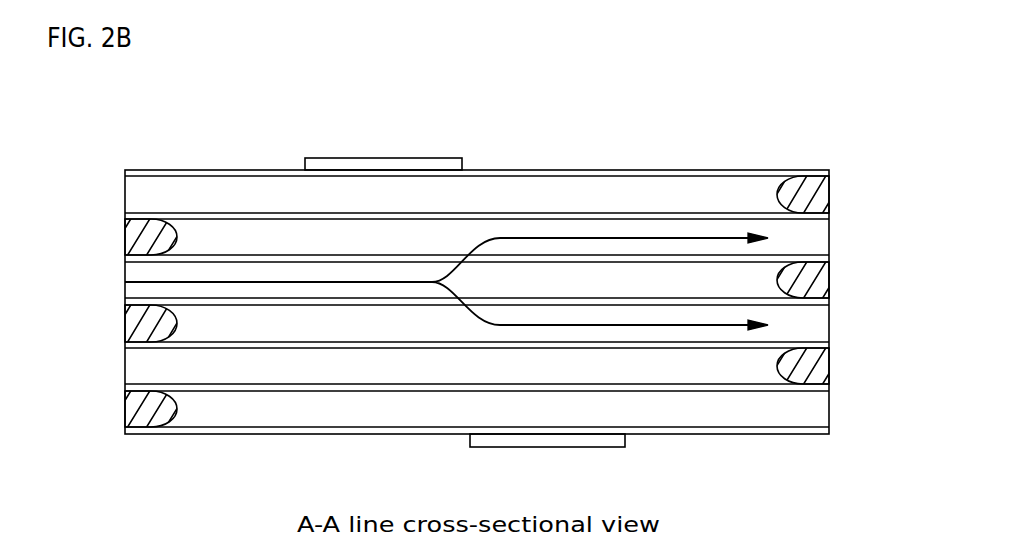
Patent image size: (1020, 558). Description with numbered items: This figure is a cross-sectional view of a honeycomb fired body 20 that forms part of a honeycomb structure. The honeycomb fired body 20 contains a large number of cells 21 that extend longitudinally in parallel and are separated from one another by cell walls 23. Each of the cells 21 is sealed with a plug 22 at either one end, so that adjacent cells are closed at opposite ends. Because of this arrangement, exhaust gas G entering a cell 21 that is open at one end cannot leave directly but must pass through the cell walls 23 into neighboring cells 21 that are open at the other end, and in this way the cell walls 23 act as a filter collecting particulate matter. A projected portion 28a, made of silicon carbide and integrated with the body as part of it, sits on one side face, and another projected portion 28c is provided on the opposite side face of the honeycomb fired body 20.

The honeycomb fired body 20 is at (606, 162).
The cells 21 is at (138, 198).
The plug 22 is at (810, 193).
The cell walls 23 is at (452, 215).
The projected portion 28a is at (355, 163).
The projected portion 28c is at (595, 442).
The exhaust gas G is at (125, 282).